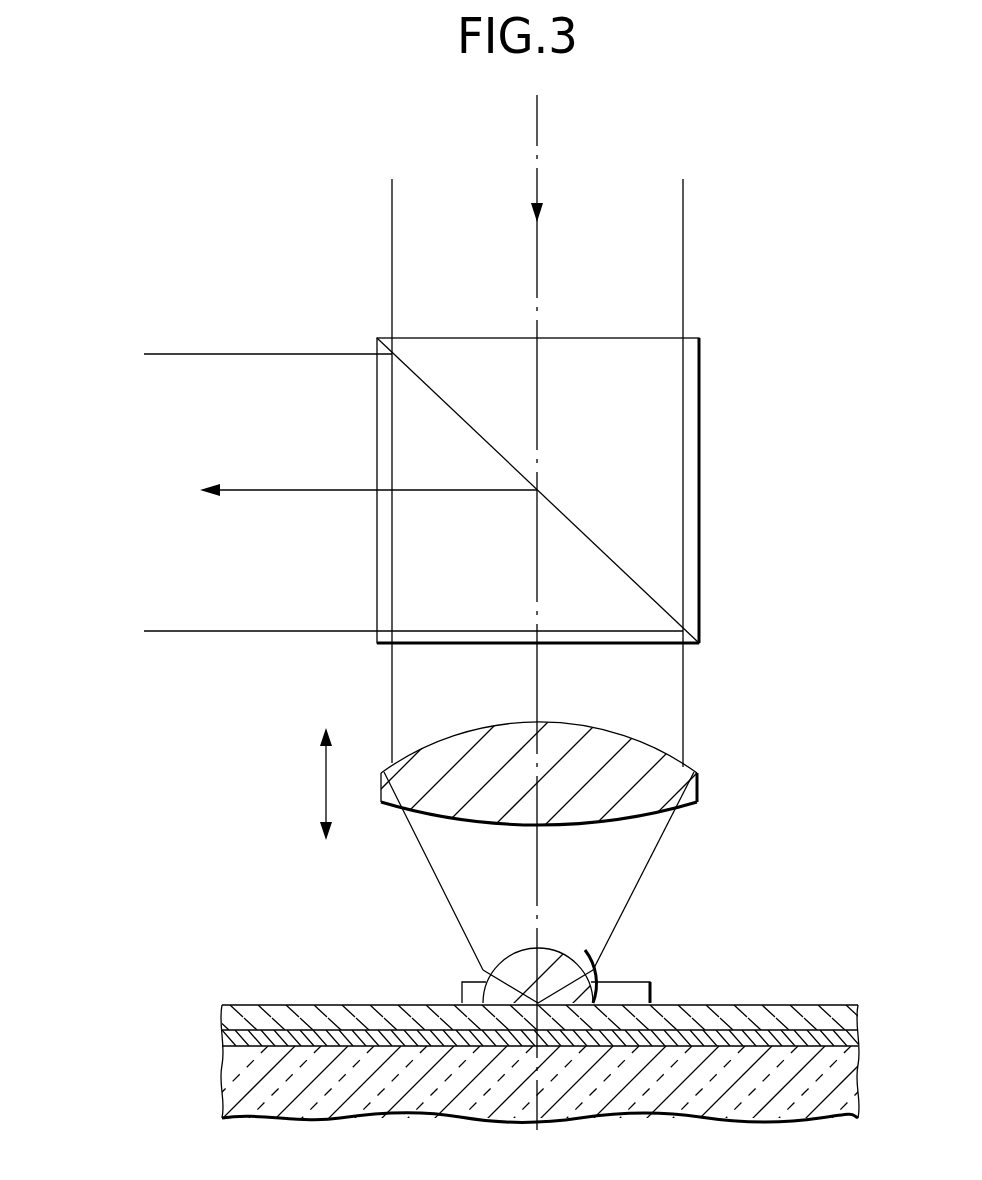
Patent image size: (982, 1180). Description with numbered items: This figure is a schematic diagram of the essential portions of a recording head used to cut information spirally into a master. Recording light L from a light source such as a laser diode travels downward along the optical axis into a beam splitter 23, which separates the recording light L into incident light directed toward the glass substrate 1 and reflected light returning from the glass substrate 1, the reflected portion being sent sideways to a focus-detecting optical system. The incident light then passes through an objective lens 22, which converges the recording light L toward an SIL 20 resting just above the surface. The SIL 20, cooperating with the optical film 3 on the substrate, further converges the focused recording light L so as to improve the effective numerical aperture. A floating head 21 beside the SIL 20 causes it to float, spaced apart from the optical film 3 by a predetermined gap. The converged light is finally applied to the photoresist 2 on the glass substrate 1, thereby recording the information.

The recording light L is at (537, 137).
The beam splitter 23 is at (667, 546).
The objective lens 22 is at (695, 770).
The SIL 20 is at (587, 978).
The floating head 21 is at (638, 992).
The optical film 3 is at (242, 1022).
The photoresist 2 is at (247, 1040).
The glass substrate 1 is at (243, 1095).